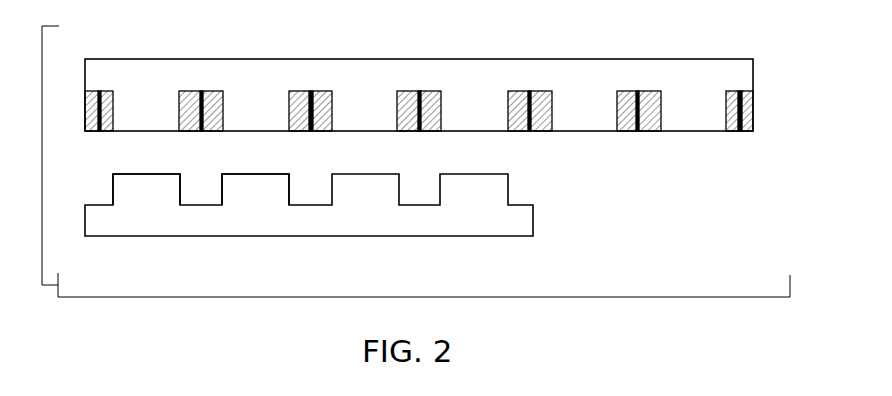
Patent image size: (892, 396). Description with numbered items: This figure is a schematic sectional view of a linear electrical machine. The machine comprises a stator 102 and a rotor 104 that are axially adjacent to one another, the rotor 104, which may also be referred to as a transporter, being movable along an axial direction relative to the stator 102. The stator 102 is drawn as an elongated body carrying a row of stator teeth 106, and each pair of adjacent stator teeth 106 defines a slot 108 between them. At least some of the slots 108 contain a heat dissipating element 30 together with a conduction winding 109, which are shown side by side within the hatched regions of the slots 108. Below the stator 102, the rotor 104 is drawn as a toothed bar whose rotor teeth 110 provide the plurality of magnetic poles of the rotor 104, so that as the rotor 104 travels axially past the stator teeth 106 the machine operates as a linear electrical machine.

The stator 102 is at (489, 54).
The rotor 104 is at (428, 240).
The stator teeth 106 is at (237, 102).
The heat dissipating element 30 is at (310, 92).
The conduction winding 109 is at (410, 100).
The slots 108 is at (632, 91).
The rotor teeth 110 is at (257, 175).